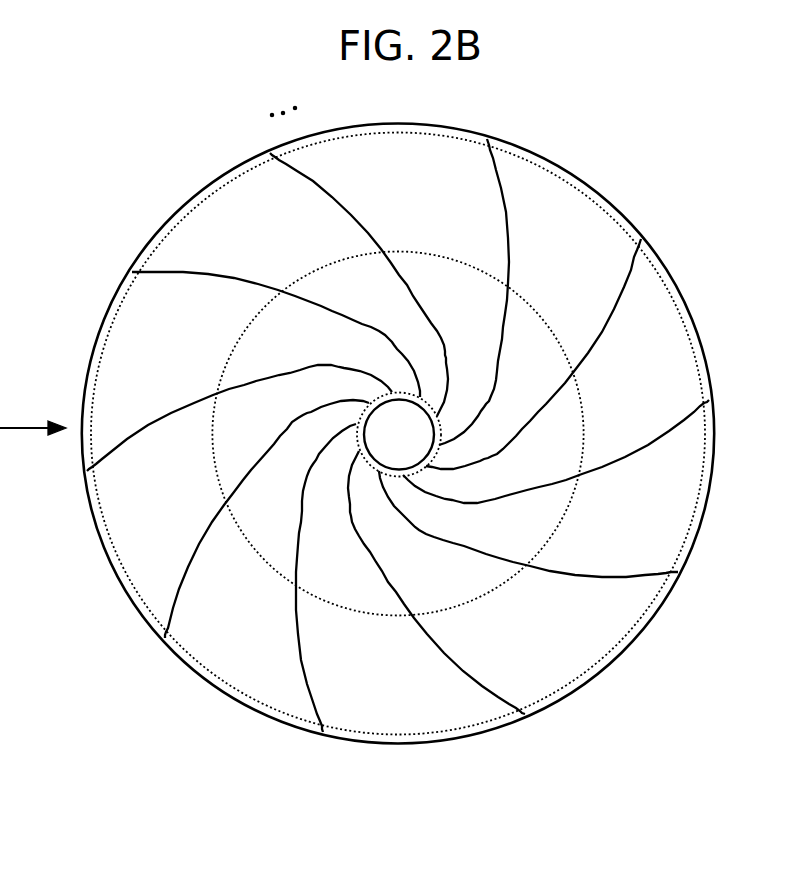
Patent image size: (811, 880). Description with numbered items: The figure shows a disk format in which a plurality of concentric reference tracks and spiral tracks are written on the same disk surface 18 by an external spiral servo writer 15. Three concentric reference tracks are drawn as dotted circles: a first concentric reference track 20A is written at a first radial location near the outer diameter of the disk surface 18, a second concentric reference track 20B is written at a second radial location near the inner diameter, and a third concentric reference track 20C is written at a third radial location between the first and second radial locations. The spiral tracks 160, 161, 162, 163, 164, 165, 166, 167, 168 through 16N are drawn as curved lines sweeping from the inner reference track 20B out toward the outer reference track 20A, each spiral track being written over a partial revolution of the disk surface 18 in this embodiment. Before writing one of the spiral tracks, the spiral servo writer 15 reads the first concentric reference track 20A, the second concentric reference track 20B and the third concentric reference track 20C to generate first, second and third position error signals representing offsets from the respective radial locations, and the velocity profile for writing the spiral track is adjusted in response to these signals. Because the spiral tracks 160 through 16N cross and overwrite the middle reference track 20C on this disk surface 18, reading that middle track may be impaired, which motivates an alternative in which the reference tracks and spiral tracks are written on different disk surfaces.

The external spiral servo writer 15 is at (0, 133).
The disk surface 18 is at (607, 177).
The first concentric reference track 20A is at (693, 522).
The second concentric reference track 20B is at (443, 433).
The third concentric reference track 20C is at (568, 515).
The spiral track 160 is at (500, 182).
The spiral track 161 is at (635, 270).
The spiral track 162 is at (683, 420).
The spiral track 163 is at (625, 578).
The spiral track 164 is at (495, 698).
The spiral track 165 is at (323, 697).
The spiral track 166 is at (173, 601).
The spiral track 167 is at (113, 457).
The spiral track 168 is at (162, 272).
The spiral track 16N is at (298, 168).